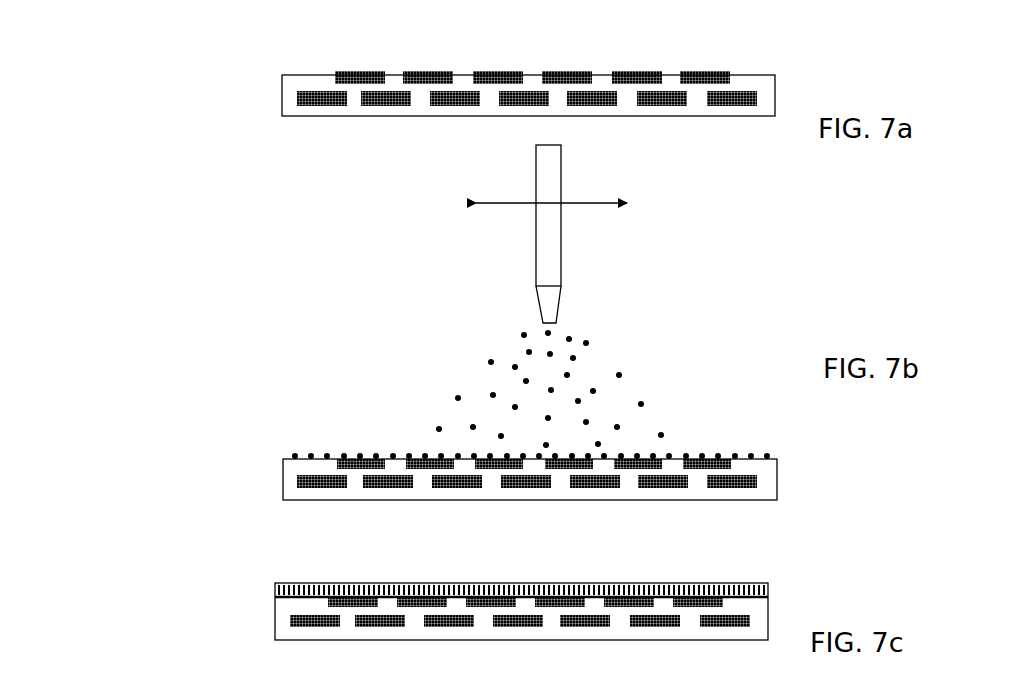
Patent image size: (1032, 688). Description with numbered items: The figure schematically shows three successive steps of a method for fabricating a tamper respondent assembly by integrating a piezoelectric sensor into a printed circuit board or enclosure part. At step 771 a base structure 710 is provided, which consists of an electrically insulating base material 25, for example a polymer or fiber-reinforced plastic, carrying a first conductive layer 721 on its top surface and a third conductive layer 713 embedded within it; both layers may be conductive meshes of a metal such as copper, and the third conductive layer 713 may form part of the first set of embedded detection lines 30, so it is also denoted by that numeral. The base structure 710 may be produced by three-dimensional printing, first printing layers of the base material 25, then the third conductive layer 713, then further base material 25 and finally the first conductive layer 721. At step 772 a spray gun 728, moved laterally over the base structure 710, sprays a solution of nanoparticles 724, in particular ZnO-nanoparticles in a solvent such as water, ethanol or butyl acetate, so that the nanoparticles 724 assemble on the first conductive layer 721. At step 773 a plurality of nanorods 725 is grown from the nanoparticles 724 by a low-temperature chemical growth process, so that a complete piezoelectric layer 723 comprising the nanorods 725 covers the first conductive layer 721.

In FIG. 7A, the base material 25 is at (742, 110).
In FIG. 7A, the embedded detection lines 30 is at (450, 103).
In FIG. 7A, the base structure 710 is at (262, 67).
In FIG. 7A, the third conductive layer 713 is at (322, 105).
In FIG. 7B, the third conductive layer 713 is at (310, 483).
In FIG. 7C, the third conductive layer 713 is at (300, 623).
In FIG. 7A, the first conductive layer 721 is at (708, 73).
In FIG. 7B, the first conductive layer 721 is at (708, 461).
In FIG. 7C, the first conductive layer 721 is at (712, 592).
In FIG. 7C, the piezoelectric layer 723 is at (275, 585).
In FIG. 7B, the nanoparticles 724 is at (490, 362).
In FIG. 7C, the nanorods 725 is at (465, 583).
In FIG. 7B, the spray gun 728 is at (563, 233).
In FIG. 7A, the step 771 is at (72, 109).
In FIG. 7B, the step 772 is at (77, 501).
In FIG. 7C, the step 773 is at (72, 621).